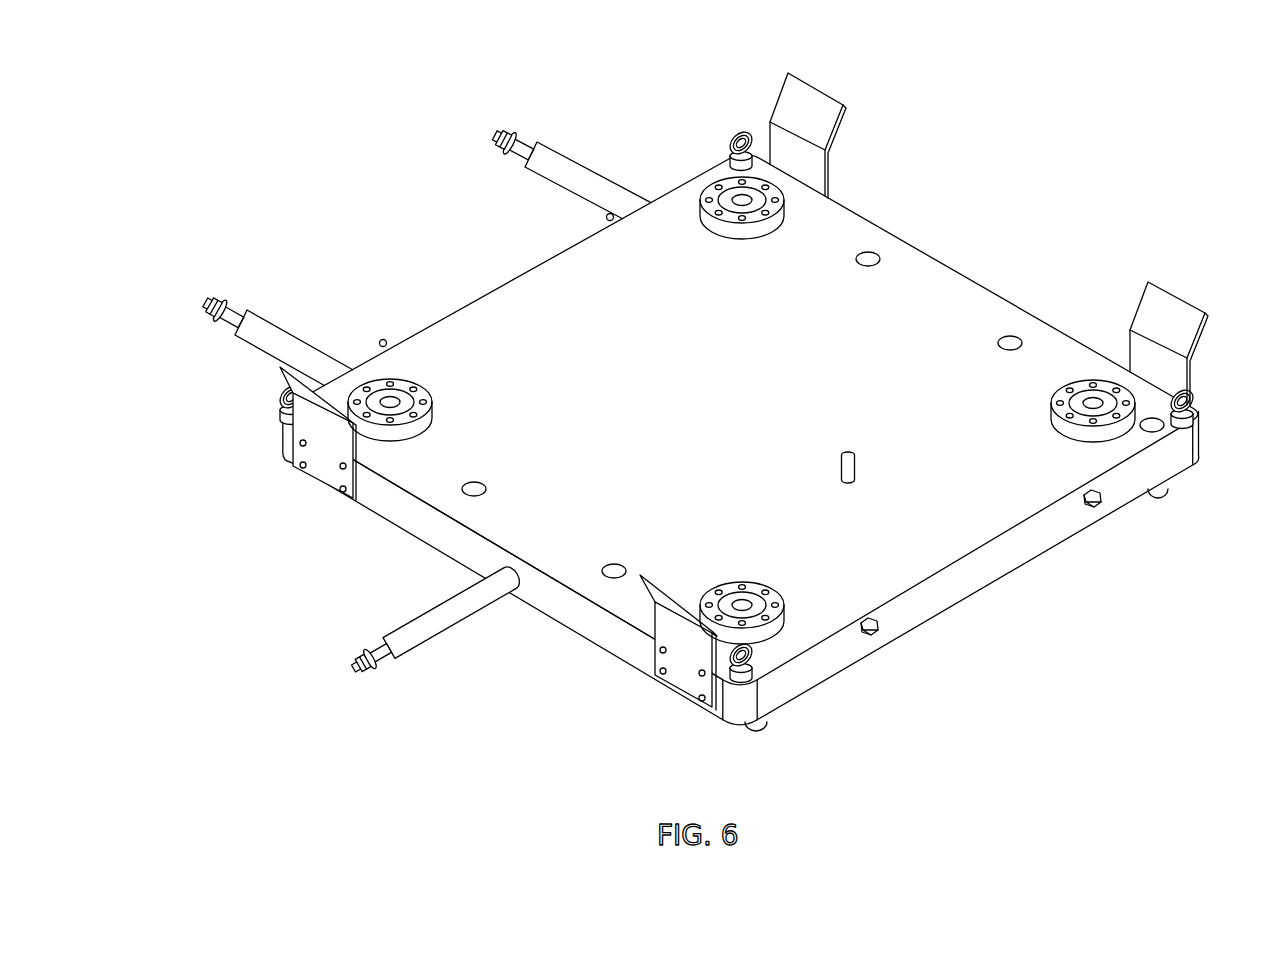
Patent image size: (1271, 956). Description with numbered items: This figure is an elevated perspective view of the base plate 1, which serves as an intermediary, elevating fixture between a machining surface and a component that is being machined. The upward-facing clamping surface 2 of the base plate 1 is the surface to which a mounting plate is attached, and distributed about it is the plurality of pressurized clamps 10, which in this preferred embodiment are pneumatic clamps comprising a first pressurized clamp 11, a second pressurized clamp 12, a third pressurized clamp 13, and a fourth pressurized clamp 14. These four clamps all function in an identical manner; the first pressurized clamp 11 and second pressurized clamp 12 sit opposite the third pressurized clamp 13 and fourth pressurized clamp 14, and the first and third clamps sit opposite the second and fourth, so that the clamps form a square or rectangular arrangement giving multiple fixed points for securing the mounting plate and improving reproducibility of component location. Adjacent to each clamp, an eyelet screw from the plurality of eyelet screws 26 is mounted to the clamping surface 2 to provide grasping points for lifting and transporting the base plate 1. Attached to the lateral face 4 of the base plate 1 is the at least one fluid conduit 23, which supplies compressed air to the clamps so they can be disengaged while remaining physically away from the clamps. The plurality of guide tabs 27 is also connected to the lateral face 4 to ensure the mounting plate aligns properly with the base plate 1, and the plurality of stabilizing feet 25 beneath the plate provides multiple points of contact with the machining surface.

The base plate 1 is at (741, 439).
The clamping surface 2 is at (668, 397).
The lateral face 4 is at (575, 618).
The plurality of pressurized clamps 10 is at (741, 410).
The first pressurized clamp 11 is at (403, 384).
The second pressurized clamp 12 is at (757, 588).
The third pressurized clamp 13 is at (713, 228).
The fourth pressurized clamp 14 is at (1082, 434).
The fluid conduit 23 is at (428, 617).
The plurality of stabilizing feet 25 is at (1158, 497).
The plurality of eyelet screws 26 is at (1197, 413).
The plurality of guide tabs 27 is at (816, 93).